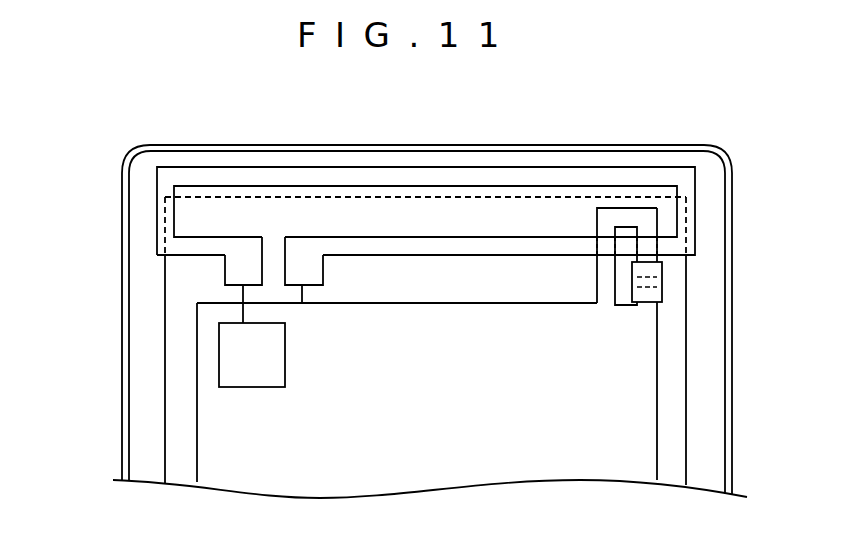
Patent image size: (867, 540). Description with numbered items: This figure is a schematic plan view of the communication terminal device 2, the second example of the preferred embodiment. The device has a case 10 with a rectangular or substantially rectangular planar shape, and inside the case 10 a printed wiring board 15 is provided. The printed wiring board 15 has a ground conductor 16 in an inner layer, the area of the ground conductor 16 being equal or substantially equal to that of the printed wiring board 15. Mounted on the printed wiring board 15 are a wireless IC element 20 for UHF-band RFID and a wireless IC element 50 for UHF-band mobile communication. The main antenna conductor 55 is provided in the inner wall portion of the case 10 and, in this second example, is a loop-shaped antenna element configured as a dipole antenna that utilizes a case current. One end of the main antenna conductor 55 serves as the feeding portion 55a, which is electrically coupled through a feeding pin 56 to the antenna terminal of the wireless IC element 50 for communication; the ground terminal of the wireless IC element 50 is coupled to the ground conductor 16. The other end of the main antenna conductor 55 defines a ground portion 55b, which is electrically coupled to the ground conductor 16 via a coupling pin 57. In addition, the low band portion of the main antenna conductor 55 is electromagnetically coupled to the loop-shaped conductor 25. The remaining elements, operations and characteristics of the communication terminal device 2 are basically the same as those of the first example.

The communication terminal device 2 is at (215, 103).
The case 10 is at (732, 317).
The printed wiring board 15 is at (686, 355).
The ground conductor 16 is at (657, 398).
The wireless IC element for UHF-band RFID 20 is at (662, 282).
The loop-shaped conductor 25 is at (597, 273).
The wireless IC element for UHF-band mobile communication 50 is at (257, 387).
The main antenna conductor 55 is at (473, 258).
The feeding portion 55a is at (230, 268).
The ground portion 55b is at (323, 268).
The feeding pin 56 is at (243, 292).
The coupling pin 57 is at (302, 293).